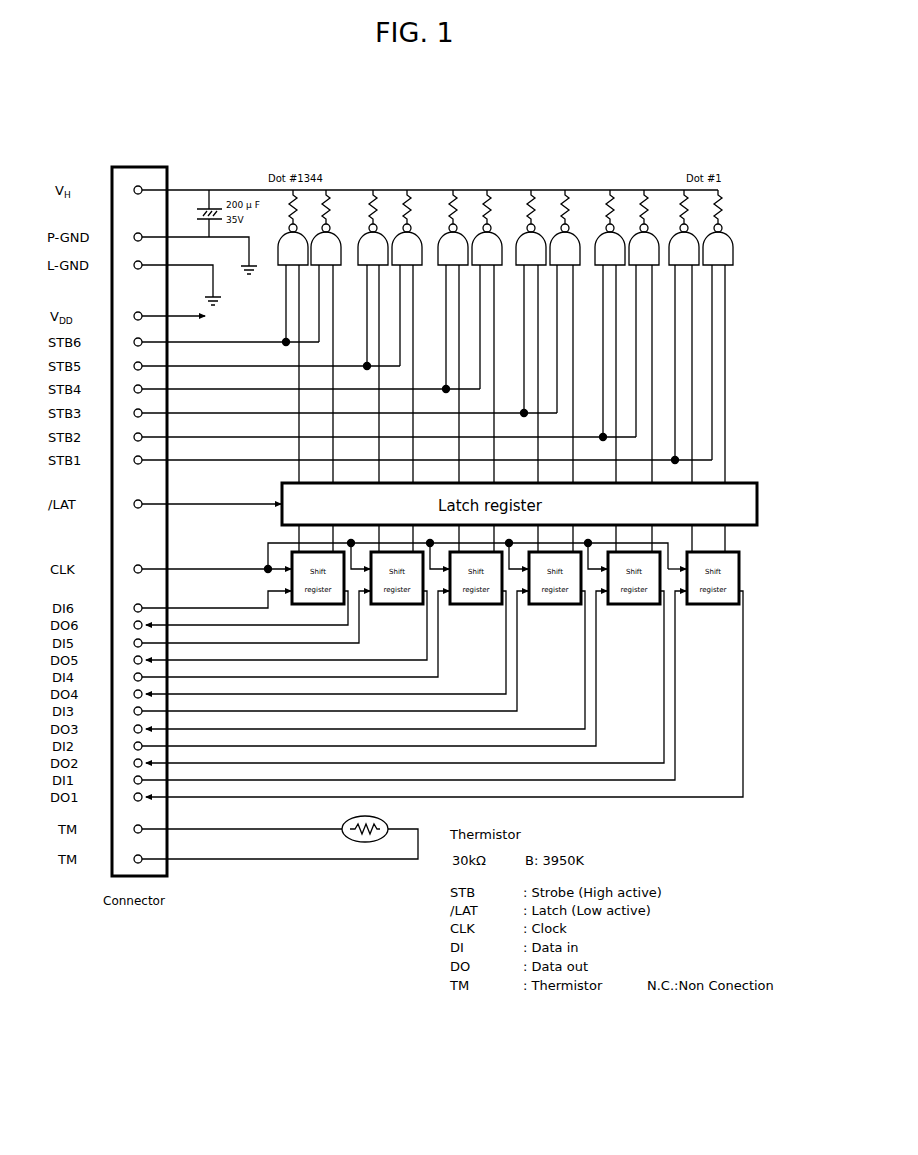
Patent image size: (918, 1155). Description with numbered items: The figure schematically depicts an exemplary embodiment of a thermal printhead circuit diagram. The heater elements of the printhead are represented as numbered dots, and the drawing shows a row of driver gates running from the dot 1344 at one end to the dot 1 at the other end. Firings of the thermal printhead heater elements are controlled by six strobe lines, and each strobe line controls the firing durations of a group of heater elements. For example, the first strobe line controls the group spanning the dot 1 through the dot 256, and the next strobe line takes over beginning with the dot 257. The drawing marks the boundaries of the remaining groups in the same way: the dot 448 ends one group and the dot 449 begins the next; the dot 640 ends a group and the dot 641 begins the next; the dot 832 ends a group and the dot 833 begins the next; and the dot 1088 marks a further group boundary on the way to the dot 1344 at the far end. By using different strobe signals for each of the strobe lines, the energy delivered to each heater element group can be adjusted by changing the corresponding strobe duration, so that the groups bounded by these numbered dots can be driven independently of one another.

The dot 1344 is at (293, 371).
The dot 1088 is at (349, 371).
The dot 833 is at (407, 371).
The dot 832 is at (453, 371).
The dot 641 is at (487, 371).
The dot 640 is at (531, 371).
The dot 449 is at (565, 371).
The dot 448 is at (610, 371).
The dot 257 is at (644, 371).
The dot 256 is at (684, 371).
The dot 1 is at (718, 371).